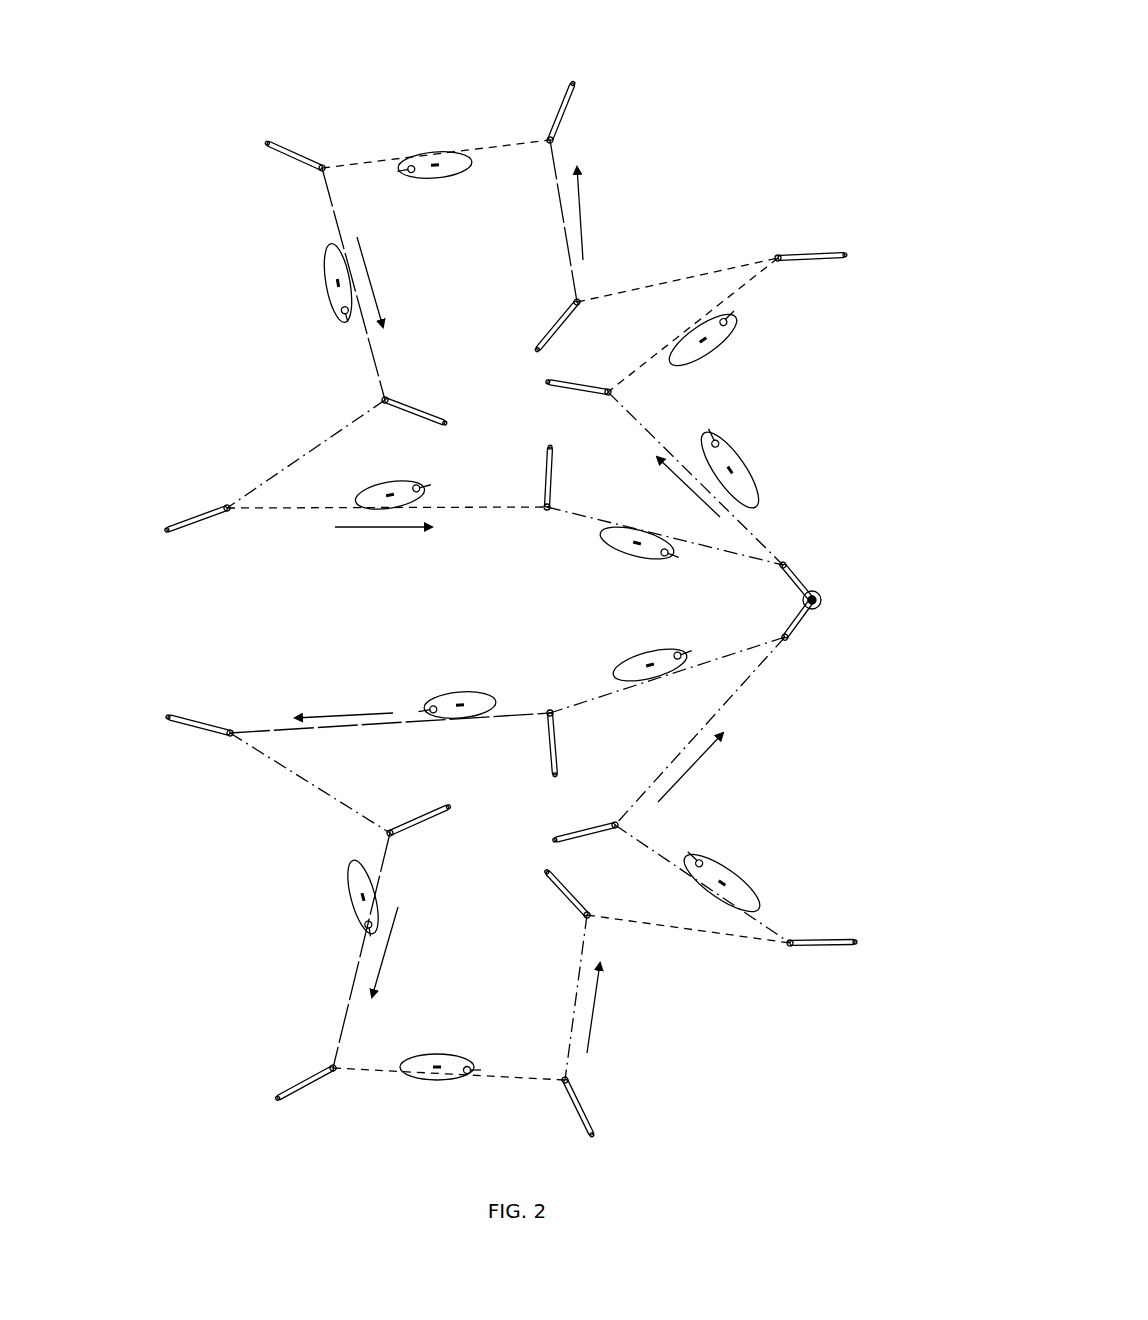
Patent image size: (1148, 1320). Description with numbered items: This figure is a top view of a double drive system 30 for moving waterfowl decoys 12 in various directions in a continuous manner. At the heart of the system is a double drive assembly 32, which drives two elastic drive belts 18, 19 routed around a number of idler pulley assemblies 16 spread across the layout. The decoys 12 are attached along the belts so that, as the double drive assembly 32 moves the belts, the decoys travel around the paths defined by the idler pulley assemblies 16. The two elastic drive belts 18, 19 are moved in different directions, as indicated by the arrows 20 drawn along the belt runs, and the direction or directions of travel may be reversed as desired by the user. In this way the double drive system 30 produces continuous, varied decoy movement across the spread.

The waterfowl decoy 12 is at (437, 163).
The idler pulley assembly 16 is at (275, 142).
The elastic drive belt 18 is at (353, 992).
The elastic drive belt 19 is at (333, 437).
The arrow 20 is at (373, 280).
The double drive system 30 is at (700, 123).
The double drive assembly 32 is at (820, 593).